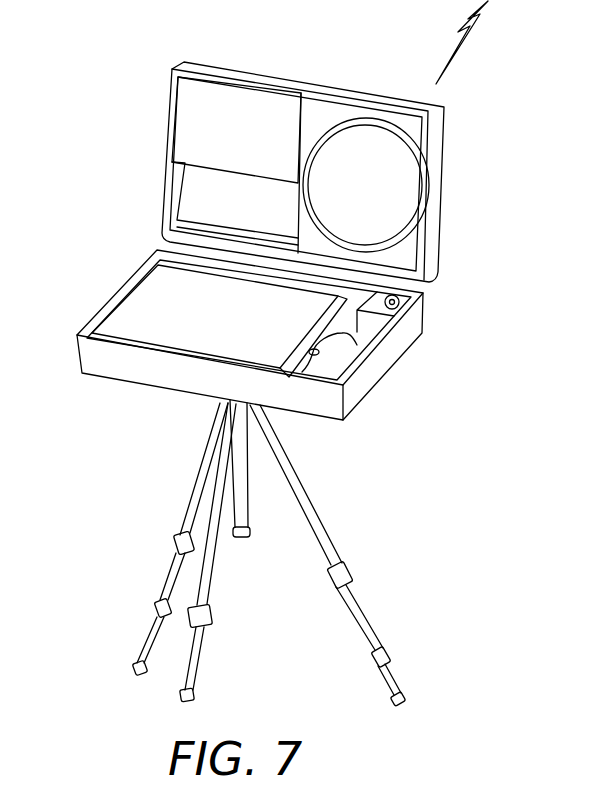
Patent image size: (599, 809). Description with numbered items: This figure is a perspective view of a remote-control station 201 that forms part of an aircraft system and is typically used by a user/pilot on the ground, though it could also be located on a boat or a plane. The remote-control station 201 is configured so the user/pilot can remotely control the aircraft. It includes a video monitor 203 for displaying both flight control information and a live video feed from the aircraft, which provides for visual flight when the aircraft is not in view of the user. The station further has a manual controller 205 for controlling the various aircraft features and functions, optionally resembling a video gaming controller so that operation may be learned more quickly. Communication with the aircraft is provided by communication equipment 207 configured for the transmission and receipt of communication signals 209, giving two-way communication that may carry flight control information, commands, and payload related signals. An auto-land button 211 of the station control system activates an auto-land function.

The remote-control station 201 is at (113, 205).
The video monitor 203 is at (168, 305).
The manual controller 205 is at (337, 363).
The communication equipment 207 is at (283, 93).
The communication signals 209 is at (462, 22).
The auto-land button 211 is at (396, 301).